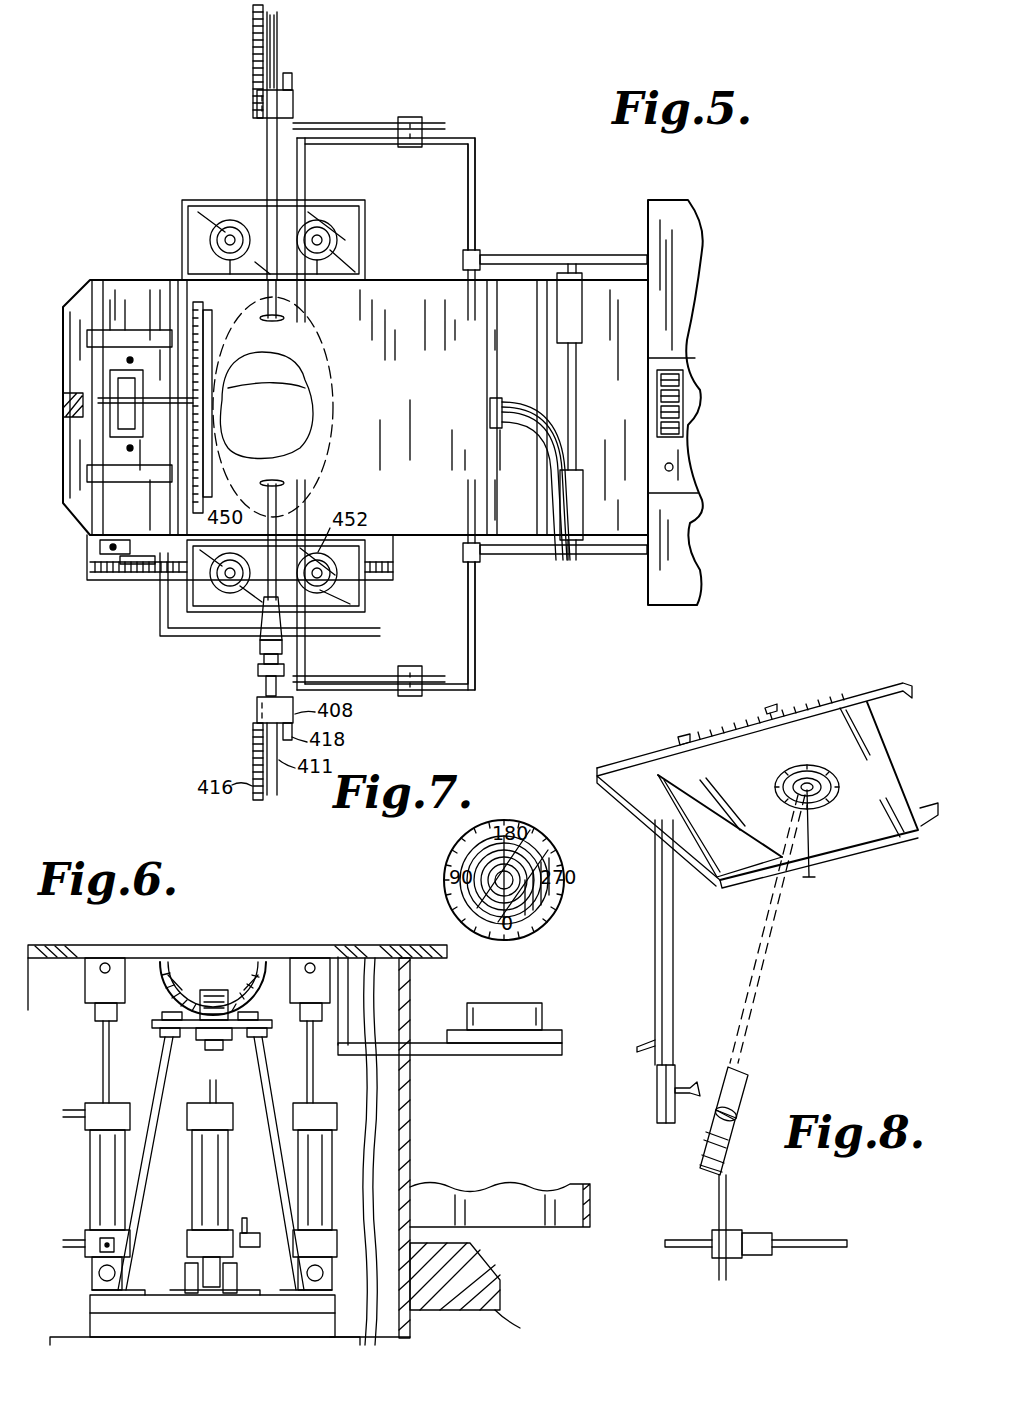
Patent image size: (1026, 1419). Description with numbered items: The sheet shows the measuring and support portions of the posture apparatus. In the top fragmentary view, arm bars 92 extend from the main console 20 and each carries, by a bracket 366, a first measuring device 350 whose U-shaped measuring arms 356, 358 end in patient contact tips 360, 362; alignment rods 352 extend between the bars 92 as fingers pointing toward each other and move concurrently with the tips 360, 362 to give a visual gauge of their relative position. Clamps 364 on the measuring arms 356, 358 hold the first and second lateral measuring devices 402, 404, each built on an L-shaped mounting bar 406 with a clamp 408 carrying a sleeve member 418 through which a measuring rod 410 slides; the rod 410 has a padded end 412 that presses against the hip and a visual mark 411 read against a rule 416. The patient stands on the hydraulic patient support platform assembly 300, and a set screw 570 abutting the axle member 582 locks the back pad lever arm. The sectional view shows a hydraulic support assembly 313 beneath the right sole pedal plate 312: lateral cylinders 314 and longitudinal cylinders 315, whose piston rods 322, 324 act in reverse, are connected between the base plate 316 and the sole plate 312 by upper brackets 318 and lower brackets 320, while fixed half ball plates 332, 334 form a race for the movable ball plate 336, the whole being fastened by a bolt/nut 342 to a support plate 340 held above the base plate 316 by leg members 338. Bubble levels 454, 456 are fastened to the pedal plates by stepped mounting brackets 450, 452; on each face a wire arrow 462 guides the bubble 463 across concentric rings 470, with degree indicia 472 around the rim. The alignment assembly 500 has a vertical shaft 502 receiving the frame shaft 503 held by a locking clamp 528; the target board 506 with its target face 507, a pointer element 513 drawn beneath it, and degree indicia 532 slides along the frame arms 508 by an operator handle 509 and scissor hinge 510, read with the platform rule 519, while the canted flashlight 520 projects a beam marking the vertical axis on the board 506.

In FIG. 5, the main console unit 20 is at (662, 612).
In FIG. 5, the arm bars 92 is at (605, 556).
In FIG. 5, the hydraulic patient support platform assembly 300 is at (412, 258).
In FIG. 6, the right sole pedal support plate 312 is at (202, 944).
In FIG. 6, the hydraulic support assembly 313 is at (342, 1242).
In FIG. 6, the lateral hydraulic cylinders 314 is at (336, 1190).
In FIG. 6, the longitudinal hydraulic cylinders 315 is at (195, 1222).
In FIG. 6, the base plate 316 is at (90, 1313).
In FIG. 6, the upper brackets 318 is at (98, 975).
In FIG. 6, the lower brackets 320 is at (92, 1273).
In FIG. 6, the piston rod 322 is at (313, 1060).
In FIG. 6, the piston rod 324 is at (215, 1102).
In FIG. 6, the semispherical half ball plate 332 is at (210, 988).
In FIG. 6, the semispherical half ball plate 334 is at (172, 992).
In FIG. 6, the movable semispherical ball plate 336 is at (250, 990).
In FIG. 6, the leg members 338 is at (257, 1072).
In FIG. 6, the support plate 340 is at (158, 1024).
In FIG. 6, the bolt/nut combination 342 is at (200, 1050).
In FIG. 5, the first measuring device 350 is at (436, 644).
In FIG. 5, the alignment rods 352 is at (545, 488).
In FIG. 5, the U-shaped measuring arm 356 is at (477, 188).
In FIG. 5, the U-shaped measuring arm 358 is at (477, 640).
In FIG. 5, the patient contact tip 360 is at (300, 322).
In FIG. 5, the patient contact tip 362 is at (306, 482).
In FIG. 5, the clamps 364 is at (422, 698).
In FIG. 5, the bracket 366 is at (482, 562).
In FIG. 5, the first lateral measuring device 402 is at (258, 142).
In FIG. 5, the second lateral measuring device 404 is at (228, 721).
In FIG. 5, the L-shaped mounting bar 406 is at (380, 685).
In FIG. 5, the clamp 408 is at (294, 102).
In FIG. 5, the measuring rod 410 is at (266, 160).
In FIG. 5, the visual mark 411 is at (280, 58).
In FIG. 5, the patient contact padded end 412 is at (245, 466).
In FIG. 5, the rule 416 is at (252, 42).
In FIG. 5, the sleeve member 418 is at (290, 78).
In FIG. 5, the stepped mounting bracket 450 is at (228, 245).
In FIG. 5, the stepped mounting bracket 452 is at (327, 245).
In FIG. 6, the stepped mounting bracket 452 is at (440, 1056).
In FIG. 5, the bubble level 454 is at (273, 223).
In FIG. 7, the bubble level 454 is at (519, 794).
In FIG. 5, the bubble level 456 is at (322, 222).
In FIG. 6, the bubble level 456 is at (548, 1008).
In FIG. 7, the wire arrow 462 is at (540, 856).
In FIG. 7, the measuring bubble 463 is at (552, 878).
In FIG. 7, the concentric rings 470 is at (528, 935).
In FIG. 7, the circular degree indicia 472 is at (445, 890).
In FIG. 8, the superior skeletal alignment assembly 500 is at (880, 880).
In FIG. 8, the vertically extending shaft 502 is at (658, 1110).
In FIG. 8, the vertical shaft 503 is at (678, 978).
In FIG. 8, the target board 506 is at (878, 748).
In FIG. 8, the target face 507 is at (808, 766).
In FIG. 8, the laterally spaced arms 508 is at (878, 680).
In FIG. 8, the operator handle 509 is at (640, 1046).
In FIG. 8, the scissor hinge 510 is at (712, 792).
In FIG. 8, the pointer 513 is at (812, 870).
In FIG. 6, the measuring rule 519 is at (495, 1265).
In FIG. 8, the flashlight device 520 is at (745, 1095).
In FIG. 8, the locking clamp 528 is at (690, 1082).
In FIG. 5, the circular degree indicia 532 is at (205, 640).
In FIG. 5, the set screw 570 is at (146, 430).
In FIG. 5, the axle member 582 is at (190, 470).